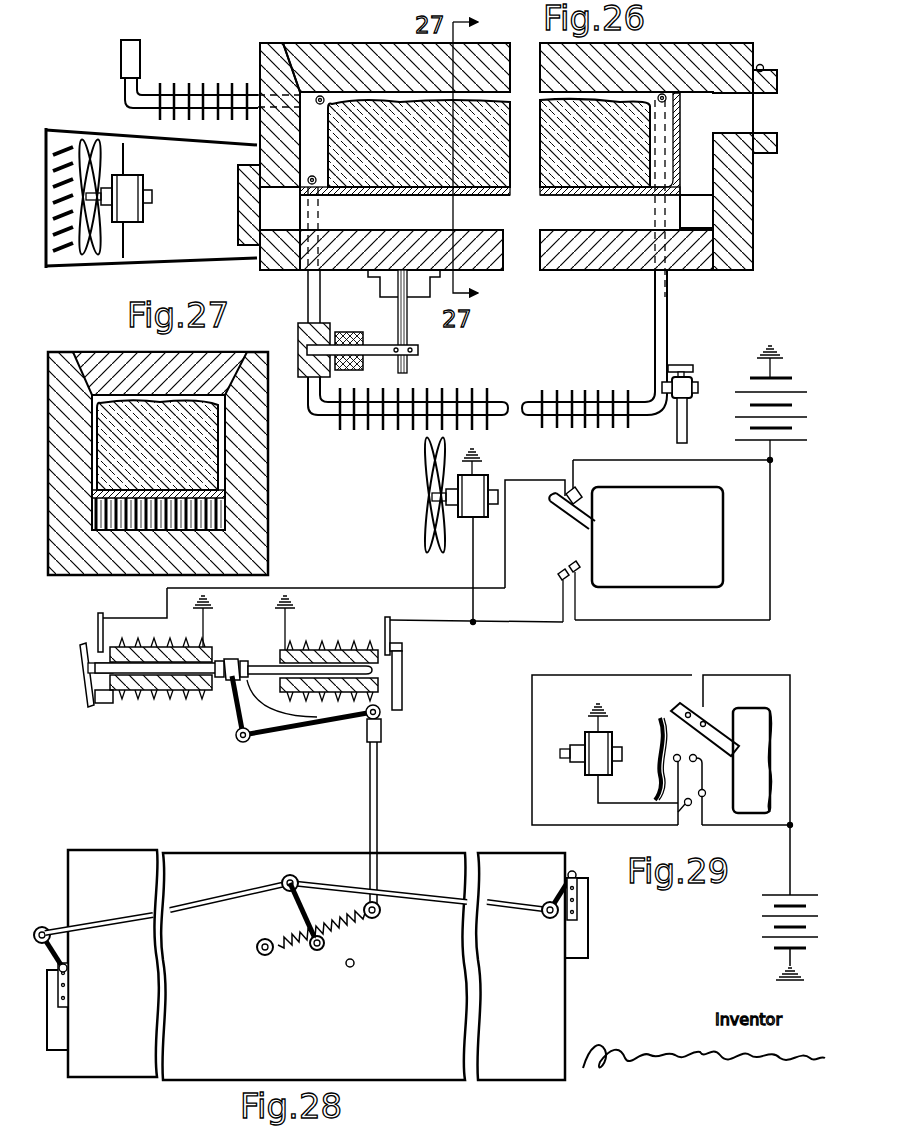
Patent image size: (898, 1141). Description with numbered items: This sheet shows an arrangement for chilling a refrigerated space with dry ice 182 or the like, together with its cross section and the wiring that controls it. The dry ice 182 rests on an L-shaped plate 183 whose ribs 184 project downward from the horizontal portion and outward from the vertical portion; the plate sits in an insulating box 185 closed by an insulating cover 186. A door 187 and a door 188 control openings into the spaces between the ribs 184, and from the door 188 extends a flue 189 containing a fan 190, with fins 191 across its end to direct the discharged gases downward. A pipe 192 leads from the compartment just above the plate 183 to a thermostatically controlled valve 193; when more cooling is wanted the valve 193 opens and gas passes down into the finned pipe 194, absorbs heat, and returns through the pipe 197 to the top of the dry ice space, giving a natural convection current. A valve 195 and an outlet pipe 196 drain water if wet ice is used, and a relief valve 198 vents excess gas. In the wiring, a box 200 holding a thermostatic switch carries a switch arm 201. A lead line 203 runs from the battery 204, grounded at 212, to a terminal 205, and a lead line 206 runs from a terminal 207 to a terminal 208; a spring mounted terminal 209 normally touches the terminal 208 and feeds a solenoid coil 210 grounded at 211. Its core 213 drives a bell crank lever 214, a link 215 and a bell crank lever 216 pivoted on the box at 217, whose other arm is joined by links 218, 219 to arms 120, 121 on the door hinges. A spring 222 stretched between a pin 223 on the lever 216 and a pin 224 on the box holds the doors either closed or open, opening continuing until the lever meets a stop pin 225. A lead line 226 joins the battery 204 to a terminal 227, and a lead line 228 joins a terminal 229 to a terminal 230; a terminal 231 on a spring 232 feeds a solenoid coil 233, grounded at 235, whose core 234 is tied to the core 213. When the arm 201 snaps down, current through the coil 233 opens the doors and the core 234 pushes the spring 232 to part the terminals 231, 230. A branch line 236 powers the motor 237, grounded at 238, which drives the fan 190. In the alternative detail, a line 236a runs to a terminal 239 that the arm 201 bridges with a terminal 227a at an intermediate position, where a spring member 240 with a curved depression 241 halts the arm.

In FIG. 28, the pivot lever 120 is at (562, 896).
In FIG. 28, the pivot lever 121 is at (43, 926).
In FIG. 26, the dry ice 182 is at (630, 107).
In FIG. 26, the plate 183 is at (386, 186).
In FIG. 27, the plate 183 is at (170, 490).
In FIG. 26, the ribs 184 is at (700, 198).
In FIG. 27, the ribs 184 is at (218, 515).
In FIG. 26, the insulating box 185 is at (722, 272).
In FIG. 27, the insulating box 185 is at (268, 542).
In FIG. 28, the insulating box 185 is at (560, 1007).
In FIG. 26, the insulating cover 186 is at (325, 46).
In FIG. 27, the insulating cover 186 is at (104, 352).
In FIG. 26, the door 187 is at (778, 136).
In FIG. 28, the door 187 is at (588, 942).
In FIG. 26, the door 188 is at (238, 220).
In FIG. 28, the door 188 is at (57, 1052).
In FIG. 26, the flue 189 is at (205, 259).
In FIG. 26, the fan 190 is at (92, 250).
In FIG. 26, the fins 191 is at (66, 148).
In FIG. 26, the pipe 192 is at (320, 312).
In FIG. 26, the valve 193 is at (340, 336).
In FIG. 26, the finned pipe 194 is at (470, 400).
In FIG. 26, the valve 195 is at (690, 386).
In FIG. 26, the outlet pipe 196 is at (687, 440).
In FIG. 26, the pipe 197 is at (657, 312).
In FIG. 26, the relief valve 198 is at (140, 55).
In FIG. 26, the box 200 is at (715, 570).
In FIG. 26, the switch arm 201 is at (566, 523).
In FIG. 29, the switch arm 201 is at (707, 718).
In FIG. 26, the lead line 203 is at (756, 466).
In FIG. 26, the battery 204 is at (773, 452).
In FIG. 26, the terminal 205 is at (582, 498).
In FIG. 26, the lead line 206 is at (505, 545).
In FIG. 26, the terminal 207 is at (556, 503).
In FIG. 28, the terminal 208 is at (99, 642).
In FIG. 28, the spring mounted terminal 209 is at (88, 682).
In FIG. 28, the solenoid coil 210 is at (113, 703).
In FIG. 28, the ground 211 is at (212, 603).
In FIG. 26, the ground 212 is at (775, 357).
In FIG. 28, the core 213 is at (226, 690).
In FIG. 28, the bell crank lever 214 is at (231, 660).
In FIG. 28, the link 215 is at (380, 768).
In FIG. 28, the bell crank lever 216 is at (352, 933).
In FIG. 28, the pivot 217 is at (317, 951).
In FIG. 28, the link 218 is at (500, 898).
In FIG. 28, the link 219 is at (220, 897).
In FIG. 28, the spring 222 is at (300, 932).
In FIG. 28, the pin 223 is at (384, 914).
In FIG. 28, the pin 224 is at (270, 956).
In FIG. 28, the stop pin 225 is at (352, 968).
In FIG. 26, the lead line 226 is at (670, 624).
In FIG. 26, the terminal 227 is at (578, 575).
In FIG. 29, the terminal 227 is at (701, 827).
In FIG. 29, the terminal 227a is at (705, 795).
In FIG. 26, the lead line 228 is at (490, 625).
In FIG. 26, the terminal 229 is at (558, 584).
In FIG. 29, the terminal 229 is at (684, 806).
In FIG. 28, the terminal 230 is at (391, 644).
In FIG. 28, the terminal 231 is at (402, 653).
In FIG. 28, the spring 232 is at (403, 687).
In FIG. 28, the solenoid coil 233 is at (330, 648).
In FIG. 28, the core 234 is at (265, 666).
In FIG. 28, the ground 235 is at (295, 604).
In FIG. 26, the branch line 236 is at (470, 572).
In FIG. 29, the branch line 236 is at (598, 795).
In FIG. 29, the line 236a is at (634, 828).
In FIG. 26, the motor 237 is at (127, 212).
In FIG. 29, the motor 237 is at (592, 745).
In FIG. 26, the ground 238 is at (485, 456).
In FIG. 29, the terminal 239 is at (680, 750).
In FIG. 29, the spring member 240 is at (658, 738).
In FIG. 29, the curved depression 241 is at (657, 784).